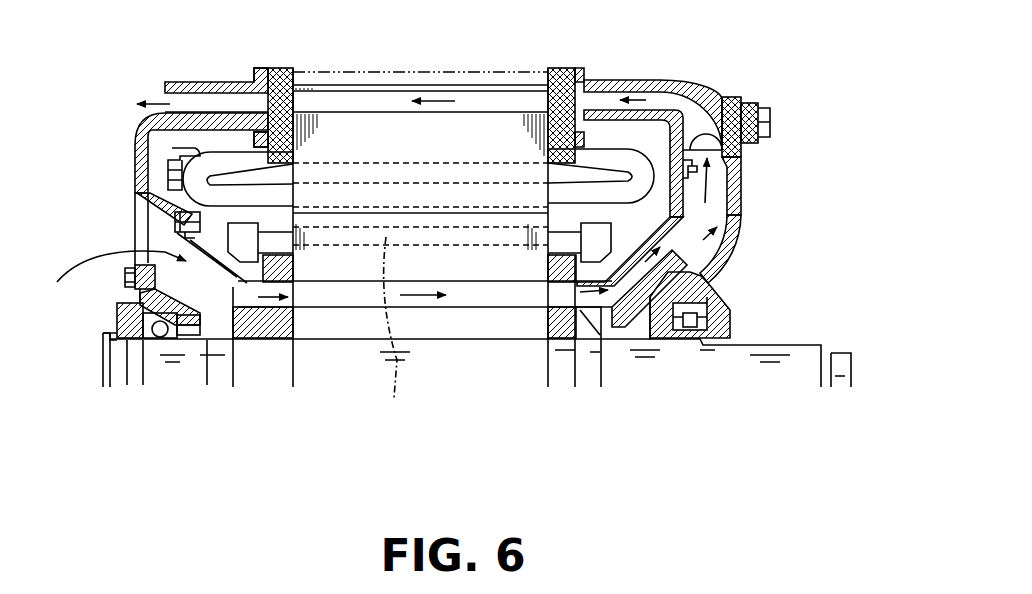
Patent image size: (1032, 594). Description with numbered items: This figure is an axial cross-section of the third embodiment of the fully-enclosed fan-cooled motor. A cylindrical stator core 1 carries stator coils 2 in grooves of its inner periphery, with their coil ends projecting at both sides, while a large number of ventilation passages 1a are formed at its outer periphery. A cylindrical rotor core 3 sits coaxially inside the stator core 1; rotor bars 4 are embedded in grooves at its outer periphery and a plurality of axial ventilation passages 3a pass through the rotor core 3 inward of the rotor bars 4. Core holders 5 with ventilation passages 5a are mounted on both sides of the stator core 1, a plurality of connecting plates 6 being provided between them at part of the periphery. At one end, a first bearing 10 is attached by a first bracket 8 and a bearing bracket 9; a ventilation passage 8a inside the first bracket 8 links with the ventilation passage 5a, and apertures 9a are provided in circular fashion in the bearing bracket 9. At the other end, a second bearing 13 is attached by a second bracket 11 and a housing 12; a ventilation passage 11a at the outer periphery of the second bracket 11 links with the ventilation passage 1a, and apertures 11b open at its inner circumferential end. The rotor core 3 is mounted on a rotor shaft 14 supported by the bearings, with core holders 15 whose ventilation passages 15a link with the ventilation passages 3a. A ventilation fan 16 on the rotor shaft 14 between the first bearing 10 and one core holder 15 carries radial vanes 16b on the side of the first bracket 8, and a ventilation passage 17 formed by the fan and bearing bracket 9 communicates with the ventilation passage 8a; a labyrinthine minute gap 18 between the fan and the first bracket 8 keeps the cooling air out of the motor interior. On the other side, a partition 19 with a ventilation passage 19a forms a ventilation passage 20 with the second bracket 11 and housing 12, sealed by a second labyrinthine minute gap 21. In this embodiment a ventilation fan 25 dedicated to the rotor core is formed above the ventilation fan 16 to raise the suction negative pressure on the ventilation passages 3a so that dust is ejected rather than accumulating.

The stator core 1 is at (477, 122).
The ventilation passages 1a is at (372, 103).
The stator coils 2 is at (691, 113).
The rotor core 3 is at (499, 268).
The ventilation passages 3a is at (460, 290).
The rotor bars 4 is at (392, 328).
The core holders 5 is at (282, 98).
The ventilation passages 5a is at (294, 100).
The connecting plates 6 is at (432, 62).
The first bracket 8 is at (665, 80).
The ventilation passage 8a is at (612, 100).
The bearing bracket 9 is at (742, 210).
The apertures 9a is at (742, 245).
The first bearing 10 is at (700, 345).
The second bracket 11 is at (135, 145).
The ventilation passage 11a is at (208, 103).
The apertures 11b is at (135, 232).
The housing 12 is at (132, 300).
The second bearing 13 is at (160, 345).
The rotor shaft 14 is at (372, 355).
The core holders 15 is at (258, 345).
The ventilation passages 15a is at (303, 348).
The ventilation fan 16 is at (728, 260).
The radial vanes 16b is at (745, 187).
The ventilation passage 17 is at (663, 305).
The minute gap 18 is at (760, 117).
The partition 19 is at (205, 325).
The ventilation passage 19a is at (232, 345).
The ventilation passage 20 is at (188, 345).
The minute gap 21 is at (134, 202).
The ventilation fan dedicated to the rotor core 25 is at (617, 300).